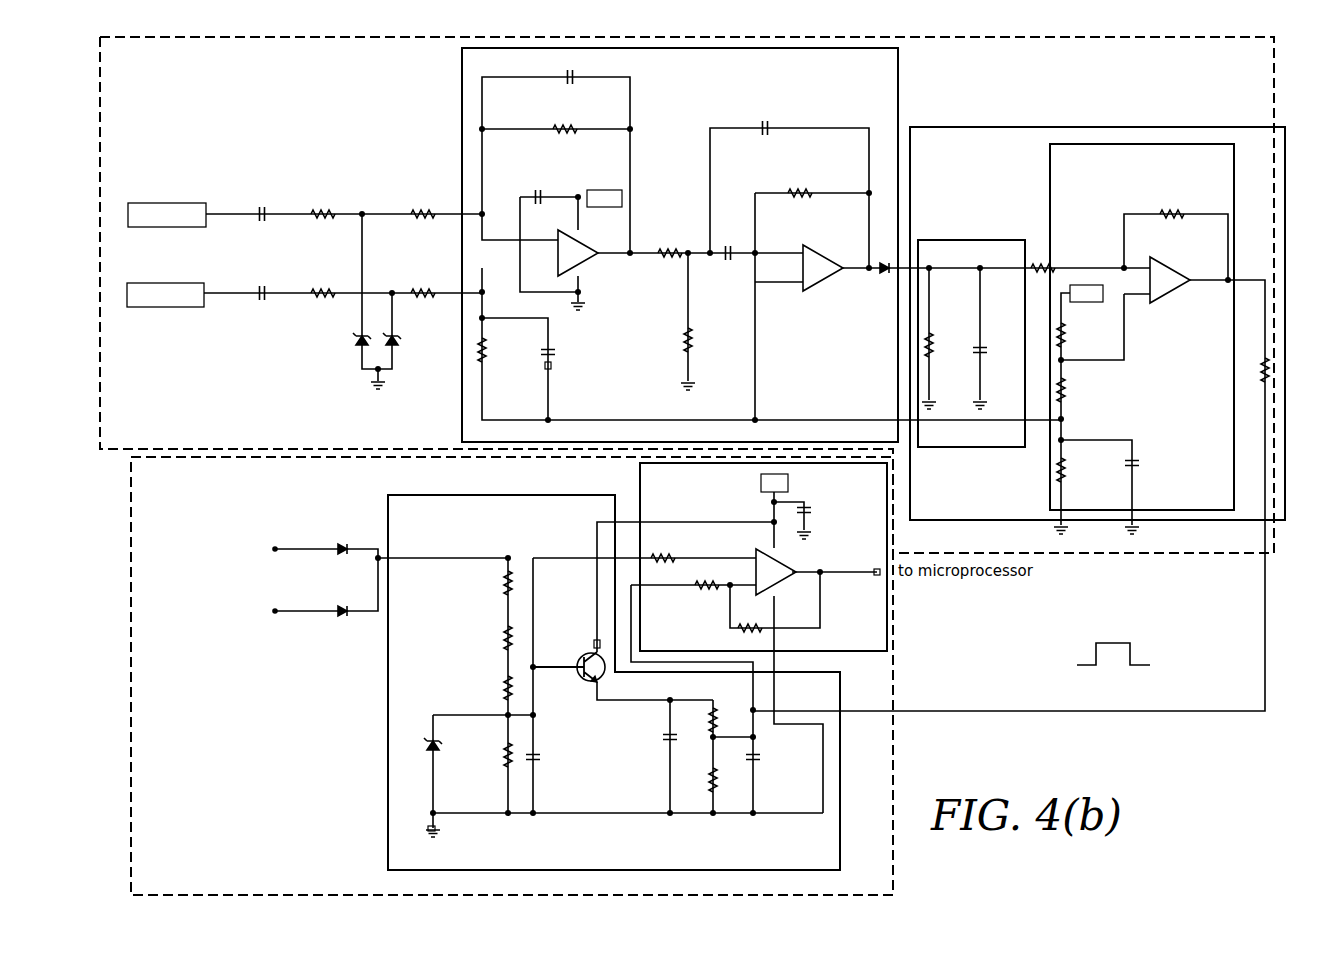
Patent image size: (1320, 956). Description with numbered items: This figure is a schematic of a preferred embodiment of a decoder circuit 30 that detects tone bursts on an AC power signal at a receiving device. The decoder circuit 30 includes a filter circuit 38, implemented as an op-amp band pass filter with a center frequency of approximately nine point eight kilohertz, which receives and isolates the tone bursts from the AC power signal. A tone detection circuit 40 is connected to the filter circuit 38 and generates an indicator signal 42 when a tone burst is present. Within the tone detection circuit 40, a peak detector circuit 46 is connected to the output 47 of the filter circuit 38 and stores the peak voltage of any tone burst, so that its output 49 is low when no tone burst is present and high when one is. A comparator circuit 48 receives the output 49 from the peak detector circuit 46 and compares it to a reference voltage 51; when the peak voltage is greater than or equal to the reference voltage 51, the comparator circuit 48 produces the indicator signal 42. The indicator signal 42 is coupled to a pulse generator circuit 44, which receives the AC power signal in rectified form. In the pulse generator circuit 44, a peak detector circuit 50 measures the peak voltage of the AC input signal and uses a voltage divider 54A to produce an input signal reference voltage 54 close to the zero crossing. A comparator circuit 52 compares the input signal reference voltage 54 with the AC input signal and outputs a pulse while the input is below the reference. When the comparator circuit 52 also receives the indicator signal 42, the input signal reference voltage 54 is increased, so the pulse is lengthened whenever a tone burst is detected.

The decoder circuit 30 is at (1158, 128).
The filter circuit 38 is at (464, 101).
The tone detection circuit 40 is at (1286, 162).
The indicator signal 42 is at (1142, 665).
The pulse generator circuit 44 is at (131, 702).
The peak detector circuit 46 is at (953, 248).
The output of the filter circuit 47 is at (829, 270).
The comparator circuit 48 is at (1165, 283).
The output from the peak detector circuit 49 is at (981, 266).
The peak detector circuit 50 is at (582, 660).
The reference voltage 51 is at (1125, 342).
The comparator circuit 52 is at (778, 575).
The input signal reference voltage 54 is at (753, 710).
The voltage divider 54A is at (713, 737).